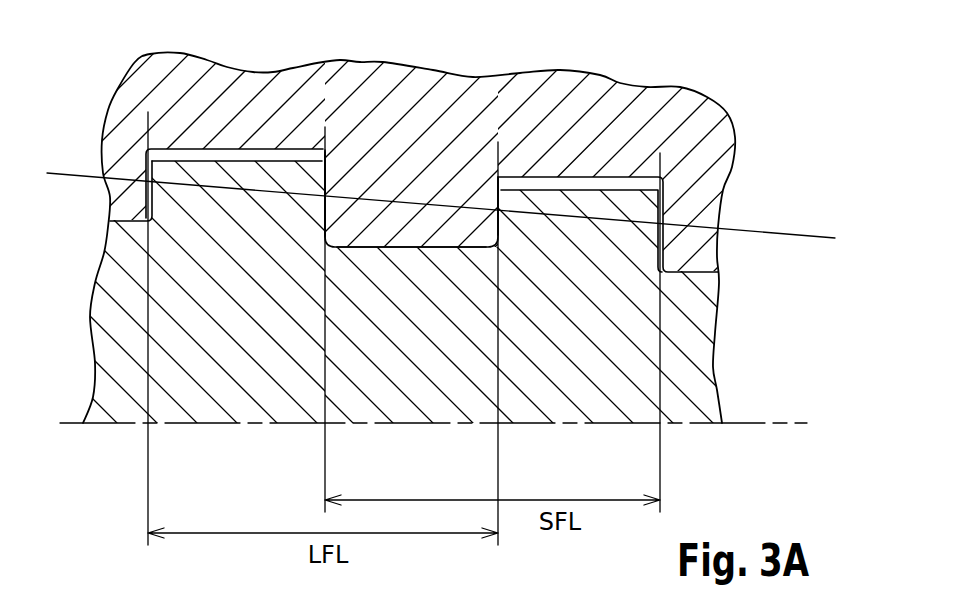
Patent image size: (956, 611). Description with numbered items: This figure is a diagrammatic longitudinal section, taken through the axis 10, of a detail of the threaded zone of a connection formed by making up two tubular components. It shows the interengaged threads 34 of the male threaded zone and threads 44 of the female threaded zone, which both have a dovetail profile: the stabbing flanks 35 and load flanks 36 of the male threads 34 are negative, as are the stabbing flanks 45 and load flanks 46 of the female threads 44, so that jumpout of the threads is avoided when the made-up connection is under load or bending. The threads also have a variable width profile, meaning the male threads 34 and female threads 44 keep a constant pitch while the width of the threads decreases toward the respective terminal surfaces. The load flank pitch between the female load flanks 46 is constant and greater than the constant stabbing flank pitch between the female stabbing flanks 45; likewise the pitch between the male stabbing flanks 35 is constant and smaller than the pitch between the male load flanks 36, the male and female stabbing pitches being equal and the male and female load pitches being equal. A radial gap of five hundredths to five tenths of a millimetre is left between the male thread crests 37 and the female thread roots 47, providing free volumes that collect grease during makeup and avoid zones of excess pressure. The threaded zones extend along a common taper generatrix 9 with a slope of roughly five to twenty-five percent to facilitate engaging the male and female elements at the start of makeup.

The taper generatrix 9 is at (780, 232).
The axis 10 is at (767, 423).
The threads of the male threaded zone 34 is at (234, 216).
The stabbing flanks of the male threads 35 is at (328, 200).
The load flanks of the male threads 36 is at (153, 193).
The male thread crests 37 is at (202, 176).
The threads of the female threaded zone 44 is at (396, 212).
The stabbing flanks of the female threads 45 is at (327, 193).
The load flanks of the female threads 46 is at (497, 213).
The female thread roots 47 is at (410, 247).